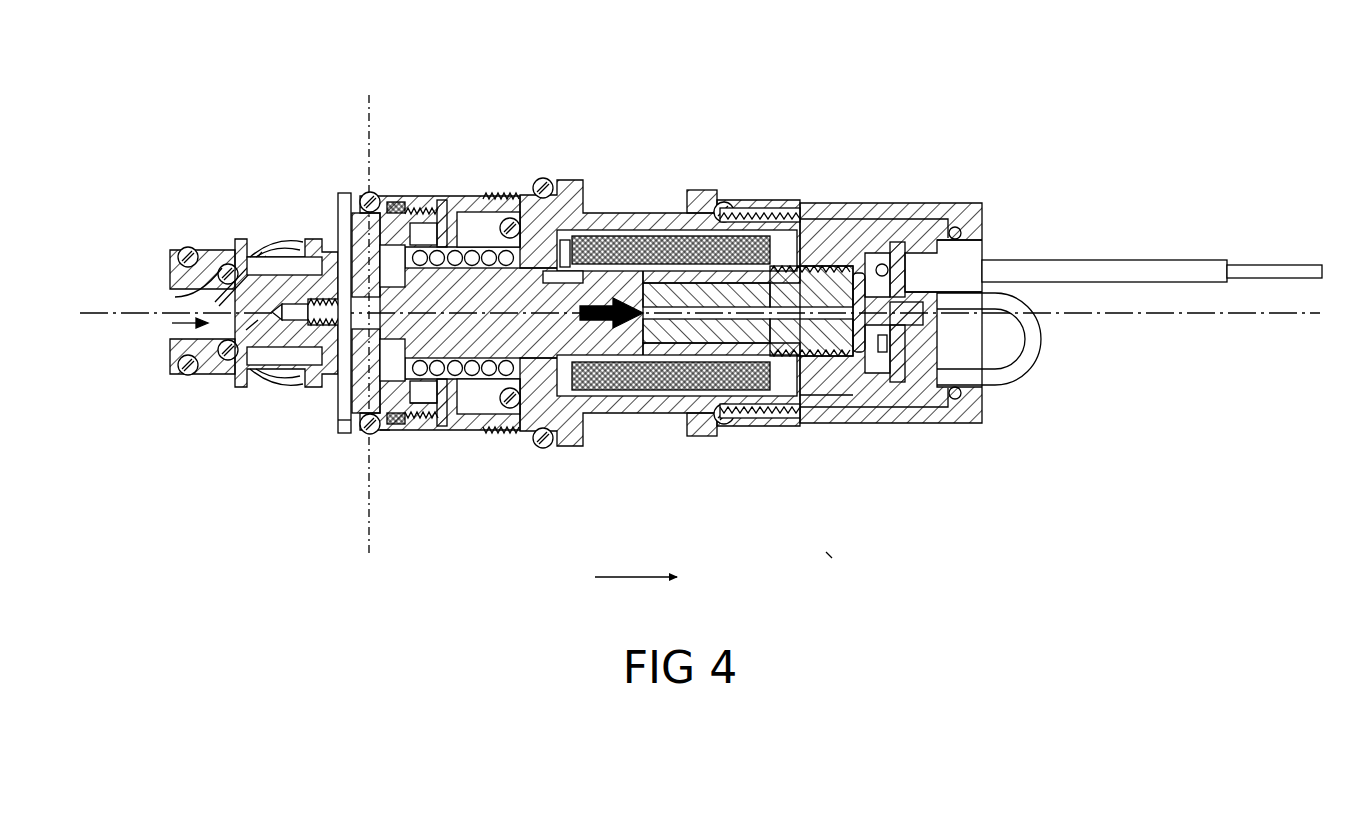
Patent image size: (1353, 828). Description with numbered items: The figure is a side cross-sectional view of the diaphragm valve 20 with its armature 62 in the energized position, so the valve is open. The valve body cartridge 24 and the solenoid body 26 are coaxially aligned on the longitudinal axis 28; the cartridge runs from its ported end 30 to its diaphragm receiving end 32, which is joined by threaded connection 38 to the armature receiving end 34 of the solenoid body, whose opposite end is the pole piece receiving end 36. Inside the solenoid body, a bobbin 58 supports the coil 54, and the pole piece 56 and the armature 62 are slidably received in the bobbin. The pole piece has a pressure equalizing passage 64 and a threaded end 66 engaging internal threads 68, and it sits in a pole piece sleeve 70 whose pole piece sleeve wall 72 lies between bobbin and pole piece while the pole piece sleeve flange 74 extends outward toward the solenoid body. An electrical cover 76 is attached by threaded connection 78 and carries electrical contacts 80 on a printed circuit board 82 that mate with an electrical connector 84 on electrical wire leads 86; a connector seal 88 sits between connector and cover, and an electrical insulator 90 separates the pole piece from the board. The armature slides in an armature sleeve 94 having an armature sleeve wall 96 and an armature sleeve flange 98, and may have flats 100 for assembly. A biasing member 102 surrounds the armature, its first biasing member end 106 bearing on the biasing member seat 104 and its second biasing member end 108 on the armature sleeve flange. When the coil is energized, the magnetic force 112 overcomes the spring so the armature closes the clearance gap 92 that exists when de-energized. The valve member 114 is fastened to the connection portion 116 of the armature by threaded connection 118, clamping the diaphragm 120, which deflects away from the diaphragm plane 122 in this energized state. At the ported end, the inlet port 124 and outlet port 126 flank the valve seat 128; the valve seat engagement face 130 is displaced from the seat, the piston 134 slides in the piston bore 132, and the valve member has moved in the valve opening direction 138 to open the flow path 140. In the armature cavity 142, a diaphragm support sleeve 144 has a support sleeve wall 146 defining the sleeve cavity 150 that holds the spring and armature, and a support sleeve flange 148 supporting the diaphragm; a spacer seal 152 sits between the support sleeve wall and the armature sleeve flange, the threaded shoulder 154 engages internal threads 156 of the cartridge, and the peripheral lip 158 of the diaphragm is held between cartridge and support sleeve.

The diaphragm valve 20 is at (827, 554).
The valve body cartridge 24 is at (315, 400).
The solenoid body 26 is at (620, 285).
The longitudinal axis 28 is at (1180, 315).
The ported end 30 is at (207, 363).
The diaphragm receiving end 32 is at (440, 275).
The armature receiving end 34 is at (470, 400).
The pole piece receiving end 36 is at (832, 255).
The threaded connection 38 is at (412, 407).
The coil 54 is at (740, 205).
The pole piece 56 is at (765, 212).
The bobbin 58 is at (695, 245).
The armature 62 is at (520, 412).
The pressure equalizing passage 64 is at (727, 420).
The threaded end 66 is at (845, 398).
The internal threads 68 is at (815, 400).
The pole piece sleeve 70 is at (708, 432).
The pole piece sleeve wall 72 is at (688, 412).
The pole piece sleeve flange 74 is at (790, 250).
The electrical cover 76 is at (930, 212).
The threaded connection 78 is at (767, 428).
The electrical contacts 80 is at (880, 262).
The printed circuit board 82 is at (900, 367).
The electrical connector 84 is at (960, 272).
The electrical wire leads 86 is at (1145, 268).
The connector seal 88 is at (1020, 372).
The electrical insulator 90 is at (865, 390).
The clearance gap 92 is at (685, 365).
The armature sleeve 94 is at (590, 425).
The armature sleeve wall 96 is at (615, 213).
The armature sleeve flange 98 is at (560, 200).
The flats 100 is at (570, 441).
The biasing member 102 is at (437, 425).
The biasing member seat 104 is at (393, 422).
The first biasing member end 106 is at (400, 418).
The second biasing member end 108 is at (540, 240).
The magnetic force 112 is at (650, 258).
The valve member 114 is at (285, 337).
The connection portion 116 is at (348, 415).
The threaded connection 118 is at (307, 340).
The diaphragm 120 is at (352, 250).
The diaphragm plane 122 is at (362, 96).
The inlet port 124 is at (258, 226).
The outlet port 126 is at (172, 323).
The valve seat 128 is at (172, 300).
The valve seat engagement face 130 is at (243, 376).
The piston bore 132 is at (342, 275).
The piston 134 is at (272, 243).
The valve opening direction 138 is at (628, 578).
The flow path 140 is at (228, 265).
The armature cavity 142 is at (492, 406).
The diaphragm support sleeve 144 is at (478, 430).
The support sleeve wall 146 is at (472, 250).
The support sleeve flange 148 is at (378, 207).
The sleeve cavity 150 is at (445, 245).
The spacer seal 152 is at (515, 215).
The threaded shoulder 154 is at (400, 222).
The internal threads 156 is at (392, 210).
The peripheral lip 158 is at (385, 432).